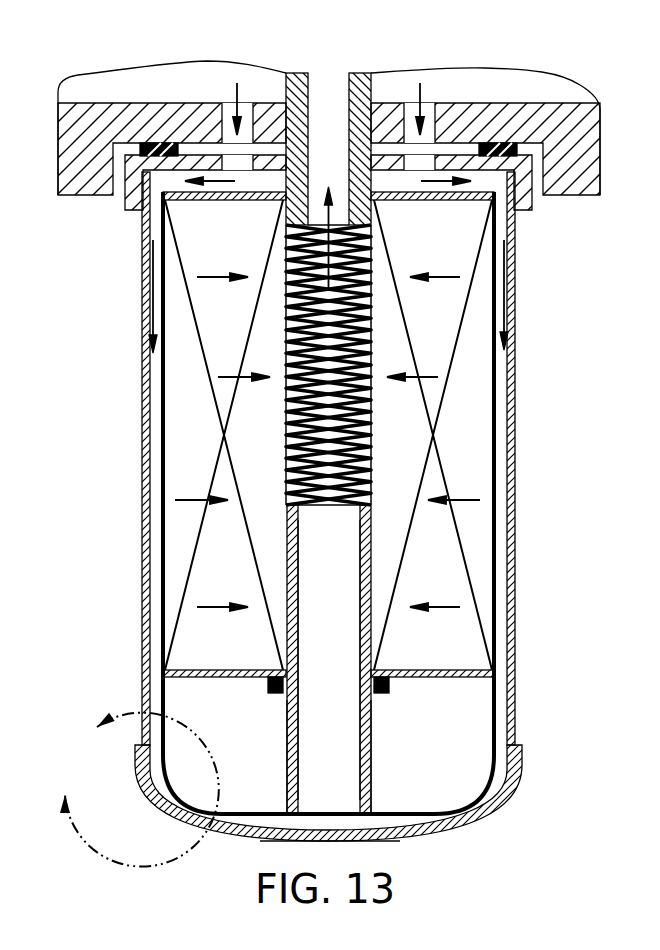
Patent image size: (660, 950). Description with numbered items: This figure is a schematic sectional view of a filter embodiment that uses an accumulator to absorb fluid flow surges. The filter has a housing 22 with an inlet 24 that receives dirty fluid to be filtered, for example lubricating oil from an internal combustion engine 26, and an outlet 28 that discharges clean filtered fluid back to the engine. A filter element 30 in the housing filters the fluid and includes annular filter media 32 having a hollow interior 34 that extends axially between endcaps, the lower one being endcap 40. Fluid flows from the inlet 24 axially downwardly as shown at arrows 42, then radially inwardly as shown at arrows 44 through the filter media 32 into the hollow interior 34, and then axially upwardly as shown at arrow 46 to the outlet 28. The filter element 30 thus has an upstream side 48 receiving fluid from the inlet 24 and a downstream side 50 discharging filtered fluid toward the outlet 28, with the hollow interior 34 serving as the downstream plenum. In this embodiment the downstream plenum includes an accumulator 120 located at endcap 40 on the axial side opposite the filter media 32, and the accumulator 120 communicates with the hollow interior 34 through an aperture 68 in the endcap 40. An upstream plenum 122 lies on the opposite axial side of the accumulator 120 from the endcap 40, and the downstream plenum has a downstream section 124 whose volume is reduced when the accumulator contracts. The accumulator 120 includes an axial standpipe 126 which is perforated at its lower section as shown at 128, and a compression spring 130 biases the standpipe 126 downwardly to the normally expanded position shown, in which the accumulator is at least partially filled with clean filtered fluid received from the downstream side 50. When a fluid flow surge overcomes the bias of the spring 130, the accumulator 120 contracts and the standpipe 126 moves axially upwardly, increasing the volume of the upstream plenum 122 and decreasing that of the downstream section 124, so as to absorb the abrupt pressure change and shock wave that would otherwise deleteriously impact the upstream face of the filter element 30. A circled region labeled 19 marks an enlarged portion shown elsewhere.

The section detail circle 19 is at (137, 790).
The housing 22 is at (142, 310).
The inlet 24 is at (430, 108).
The internal combustion engine 26 is at (573, 92).
The outlet 28 is at (328, 100).
The filter element 30 is at (162, 448).
The annular filter media 32 is at (168, 538).
The hollow interior 34 is at (288, 424).
The endcap 40 is at (208, 670).
The upstream flow path arrows 42 is at (508, 308).
The radially inward flow arrows 44 is at (428, 284).
The downstream flow path arrow 46 is at (326, 193).
The upstream side 48 is at (494, 410).
The downstream side 50 is at (368, 430).
The aperture 68 is at (385, 678).
The accumulator 120 is at (508, 787).
The upstream plenum 122 is at (462, 808).
The downstream section 124 is at (290, 648).
The axial standpipe 126 is at (371, 543).
The perforated lower section 128 is at (287, 760).
The compression spring 130 is at (286, 450).